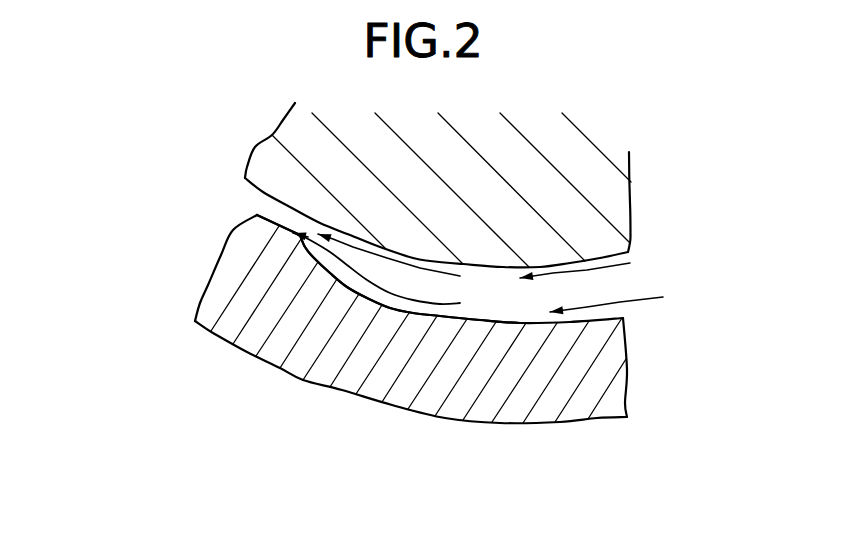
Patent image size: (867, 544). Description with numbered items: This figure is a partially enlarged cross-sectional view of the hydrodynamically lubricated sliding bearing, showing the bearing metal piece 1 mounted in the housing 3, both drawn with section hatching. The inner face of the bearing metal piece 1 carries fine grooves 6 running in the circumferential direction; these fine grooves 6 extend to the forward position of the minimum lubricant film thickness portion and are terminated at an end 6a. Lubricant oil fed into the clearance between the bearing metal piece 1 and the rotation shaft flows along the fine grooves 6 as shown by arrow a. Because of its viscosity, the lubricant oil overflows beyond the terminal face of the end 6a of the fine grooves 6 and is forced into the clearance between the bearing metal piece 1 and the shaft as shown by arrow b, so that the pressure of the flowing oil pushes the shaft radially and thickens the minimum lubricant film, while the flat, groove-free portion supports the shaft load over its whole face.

The bearing metal piece 1 is at (628, 405).
The housing 3 is at (617, 200).
The fine grooves 6 is at (510, 318).
The end 6a is at (333, 275).
The arrow a is at (643, 303).
The arrow b is at (440, 302).